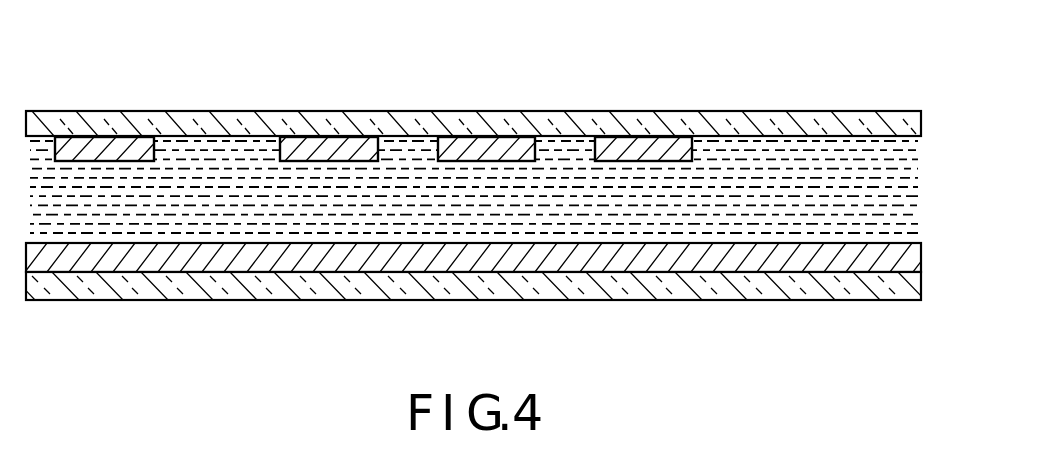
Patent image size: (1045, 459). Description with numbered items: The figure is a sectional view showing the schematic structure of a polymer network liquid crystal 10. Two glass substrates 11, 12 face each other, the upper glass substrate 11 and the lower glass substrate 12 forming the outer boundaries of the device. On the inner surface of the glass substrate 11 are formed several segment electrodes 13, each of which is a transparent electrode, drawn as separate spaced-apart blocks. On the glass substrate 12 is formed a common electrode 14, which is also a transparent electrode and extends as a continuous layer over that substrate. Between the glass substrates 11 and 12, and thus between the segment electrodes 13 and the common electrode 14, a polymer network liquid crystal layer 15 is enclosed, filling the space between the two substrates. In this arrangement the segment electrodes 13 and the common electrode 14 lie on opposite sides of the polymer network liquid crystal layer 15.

The polymer network liquid crystal 10 is at (773, 72).
The glass substrate 11 is at (844, 122).
The glass substrate 12 is at (845, 290).
The segment electrode 13 is at (100, 145).
The common electrode 14 is at (571, 252).
The polymer network liquid crystal layer 15 is at (731, 177).